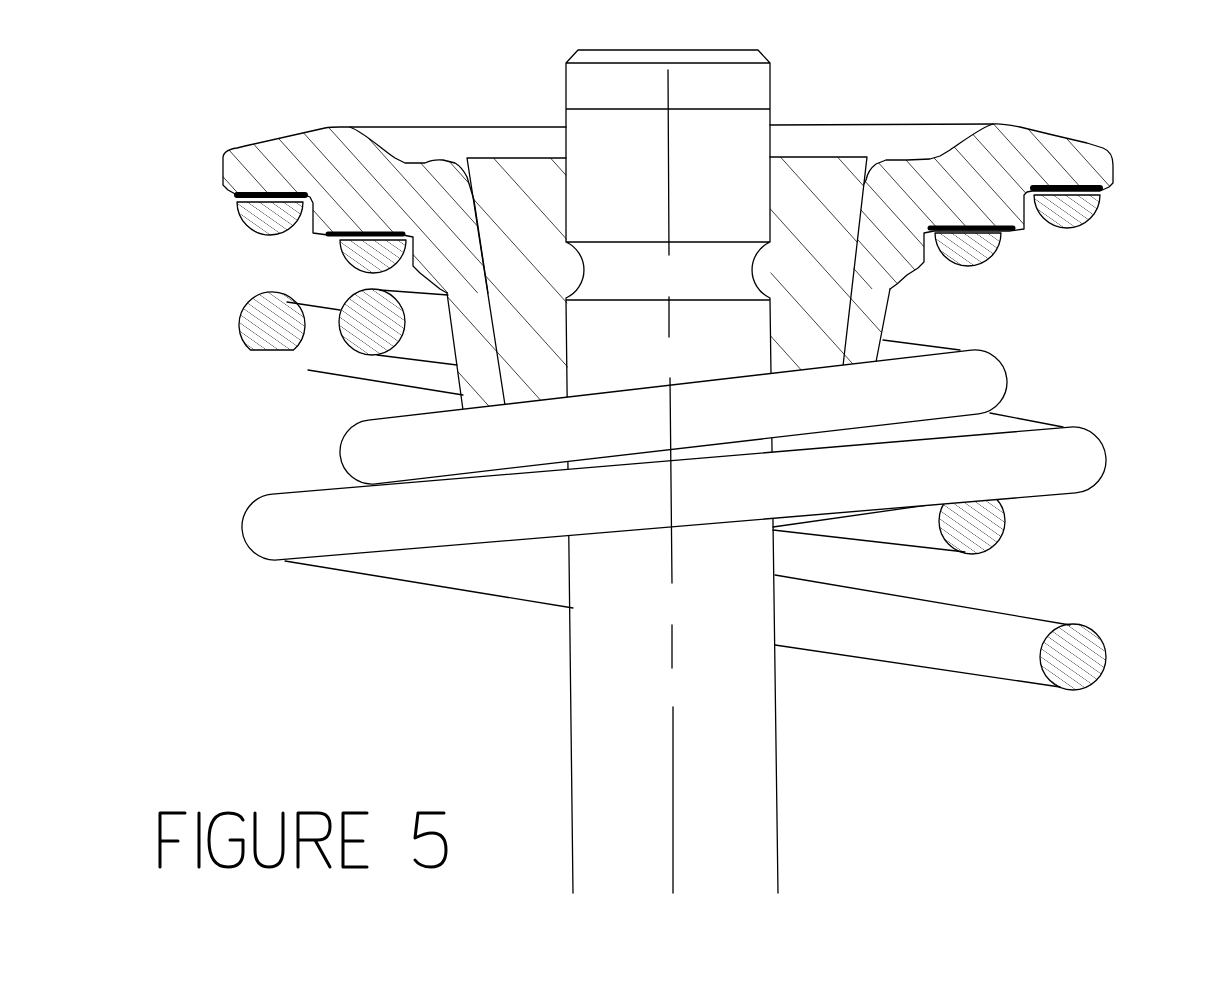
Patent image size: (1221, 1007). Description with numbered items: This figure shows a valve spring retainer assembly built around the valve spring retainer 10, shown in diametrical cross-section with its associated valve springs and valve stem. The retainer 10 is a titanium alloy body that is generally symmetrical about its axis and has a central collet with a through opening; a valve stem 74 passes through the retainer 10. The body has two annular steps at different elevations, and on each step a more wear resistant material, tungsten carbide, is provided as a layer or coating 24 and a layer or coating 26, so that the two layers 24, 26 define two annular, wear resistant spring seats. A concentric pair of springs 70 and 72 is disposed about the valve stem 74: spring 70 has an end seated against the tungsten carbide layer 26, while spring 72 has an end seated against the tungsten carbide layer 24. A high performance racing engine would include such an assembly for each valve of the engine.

The valve spring retainer 10 is at (1127, 155).
The tungsten carbide layer 24 is at (1010, 230).
The tungsten carbide layer 26 is at (1110, 197).
The spring 70 is at (1003, 375).
The spring 72 is at (1106, 453).
The valve stem 74 is at (775, 709).